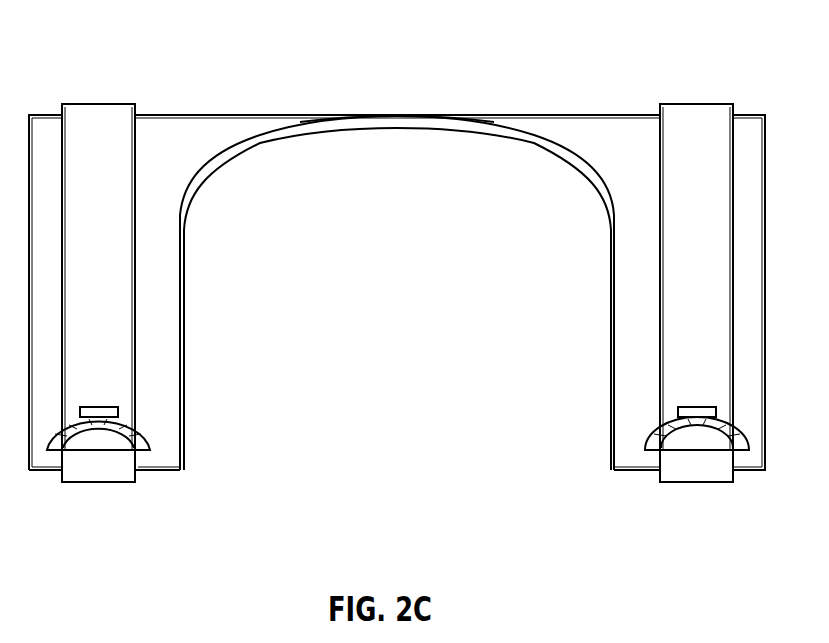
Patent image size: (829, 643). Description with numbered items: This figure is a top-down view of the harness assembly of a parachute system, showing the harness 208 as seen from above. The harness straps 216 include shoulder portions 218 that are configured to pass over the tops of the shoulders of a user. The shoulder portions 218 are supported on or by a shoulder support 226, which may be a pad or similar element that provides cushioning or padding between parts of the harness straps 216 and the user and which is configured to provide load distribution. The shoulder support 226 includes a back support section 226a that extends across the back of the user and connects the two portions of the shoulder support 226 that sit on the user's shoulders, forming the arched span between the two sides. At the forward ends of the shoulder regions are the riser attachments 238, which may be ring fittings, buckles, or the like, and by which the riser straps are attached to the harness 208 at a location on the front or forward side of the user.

The harness 208 is at (488, 108).
The harness straps 216 is at (137, 135).
The shoulder portions 218 is at (112, 337).
The shoulder support 226 is at (182, 287).
The back support section 226a is at (392, 115).
The riser attachments 238 is at (92, 420).